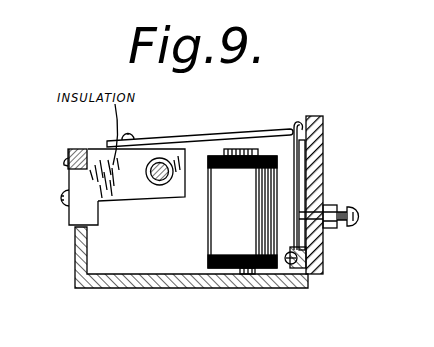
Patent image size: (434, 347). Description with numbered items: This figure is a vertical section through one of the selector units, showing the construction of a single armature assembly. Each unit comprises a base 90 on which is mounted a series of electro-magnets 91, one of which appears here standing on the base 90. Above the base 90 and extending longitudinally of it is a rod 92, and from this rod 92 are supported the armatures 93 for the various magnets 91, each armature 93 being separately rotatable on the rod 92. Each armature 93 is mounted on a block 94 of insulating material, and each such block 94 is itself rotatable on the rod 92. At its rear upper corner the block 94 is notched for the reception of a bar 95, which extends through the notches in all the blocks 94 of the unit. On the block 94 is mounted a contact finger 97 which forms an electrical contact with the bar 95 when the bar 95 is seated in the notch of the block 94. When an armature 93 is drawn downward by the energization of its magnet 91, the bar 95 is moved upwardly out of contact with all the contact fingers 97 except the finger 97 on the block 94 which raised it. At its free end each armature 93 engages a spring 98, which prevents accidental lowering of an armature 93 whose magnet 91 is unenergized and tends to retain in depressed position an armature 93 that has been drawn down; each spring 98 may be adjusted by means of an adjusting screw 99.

The base 90 is at (156, 288).
The electro-magnet 91 is at (217, 236).
The rod 92 is at (160, 160).
The armature 93 is at (244, 124).
The block of insulating material 94 is at (131, 188).
The bar 95 is at (78, 150).
The contact finger 97 is at (67, 178).
The spring 98 is at (297, 176).
The adjusting screw 99 is at (342, 226).